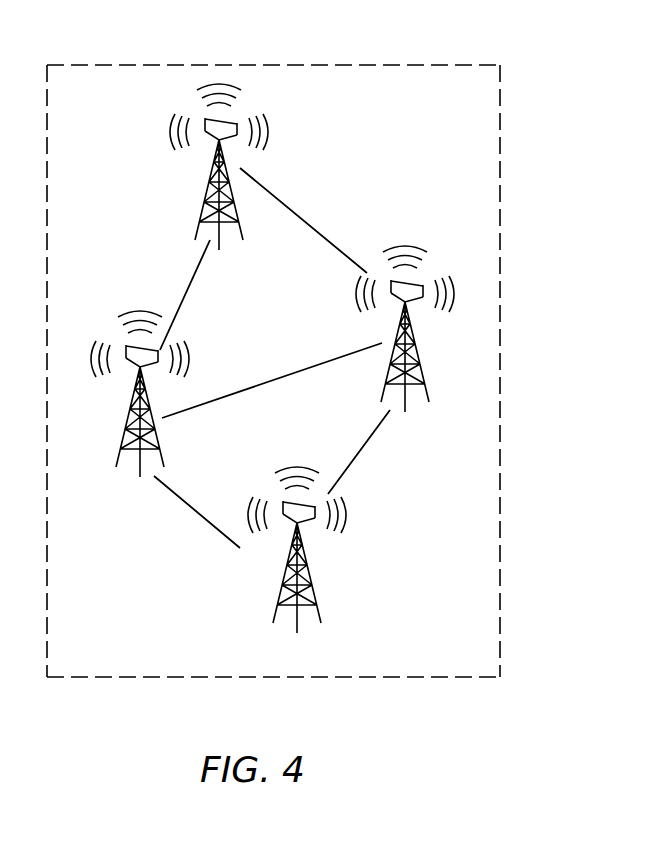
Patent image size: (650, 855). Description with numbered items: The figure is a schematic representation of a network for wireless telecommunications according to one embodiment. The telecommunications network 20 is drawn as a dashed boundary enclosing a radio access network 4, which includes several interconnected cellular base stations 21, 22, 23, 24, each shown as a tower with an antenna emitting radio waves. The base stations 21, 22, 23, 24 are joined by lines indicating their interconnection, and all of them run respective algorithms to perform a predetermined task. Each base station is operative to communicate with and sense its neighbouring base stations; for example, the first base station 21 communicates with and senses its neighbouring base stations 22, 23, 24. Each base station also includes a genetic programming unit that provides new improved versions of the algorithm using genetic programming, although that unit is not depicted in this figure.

The telecommunications network 20 is at (275, 62).
The radio access network 4 is at (489, 562).
The first base station 21 is at (425, 341).
The base station 22 is at (200, 181).
The base station 23 is at (120, 409).
The base station 24 is at (278, 570).